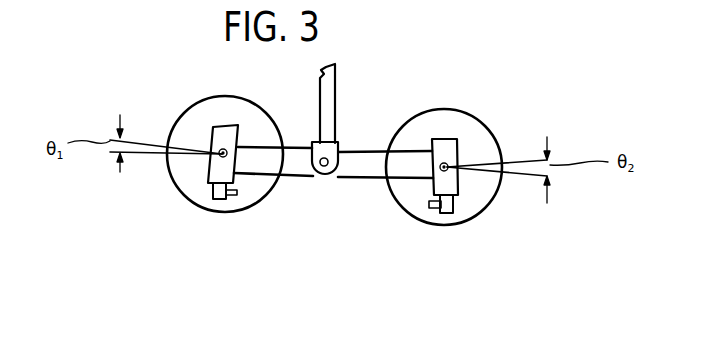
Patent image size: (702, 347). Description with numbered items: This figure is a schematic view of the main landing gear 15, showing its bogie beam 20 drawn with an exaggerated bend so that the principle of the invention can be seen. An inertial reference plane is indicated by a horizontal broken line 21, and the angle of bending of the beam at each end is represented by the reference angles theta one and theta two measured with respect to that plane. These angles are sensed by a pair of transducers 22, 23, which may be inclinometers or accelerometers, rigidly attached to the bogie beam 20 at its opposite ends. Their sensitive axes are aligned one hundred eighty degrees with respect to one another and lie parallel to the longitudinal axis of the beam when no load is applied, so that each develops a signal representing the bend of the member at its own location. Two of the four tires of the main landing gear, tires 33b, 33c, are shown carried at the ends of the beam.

The main landing gear 15 is at (295, 186).
The bogie beam 20 is at (368, 160).
The horizontal broken line 21 is at (517, 178).
The transducer 22 is at (216, 199).
The transducer 23 is at (453, 206).
The tire 33b is at (473, 128).
The tire 33c is at (208, 117).